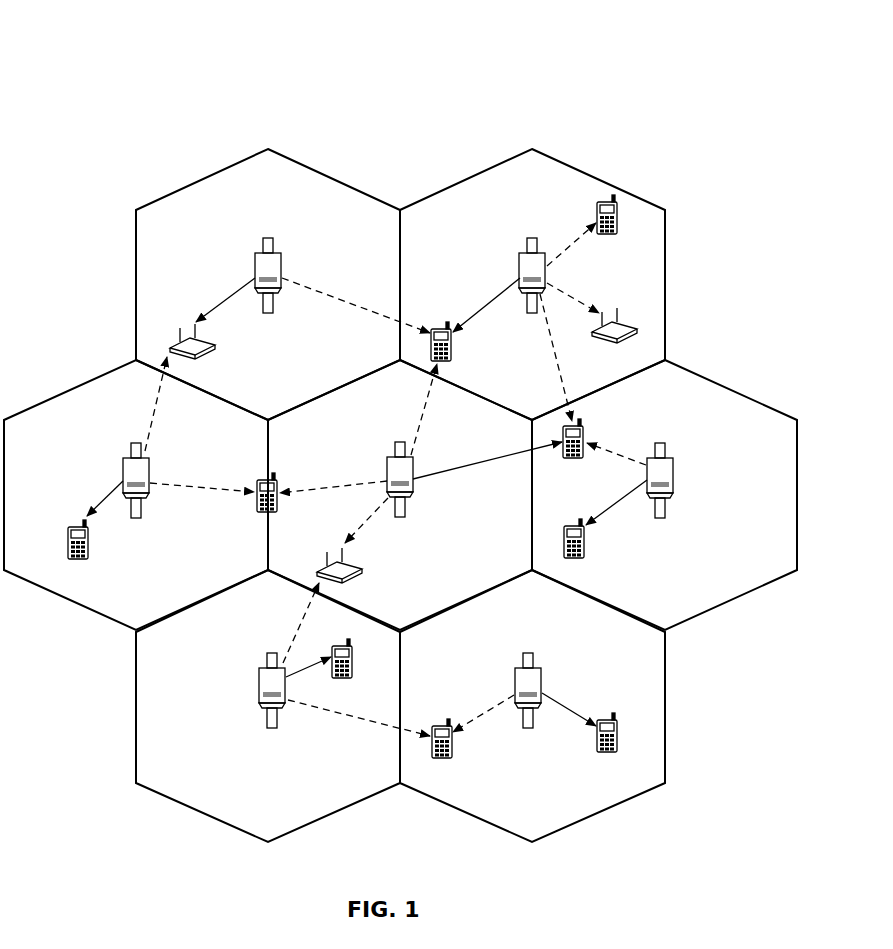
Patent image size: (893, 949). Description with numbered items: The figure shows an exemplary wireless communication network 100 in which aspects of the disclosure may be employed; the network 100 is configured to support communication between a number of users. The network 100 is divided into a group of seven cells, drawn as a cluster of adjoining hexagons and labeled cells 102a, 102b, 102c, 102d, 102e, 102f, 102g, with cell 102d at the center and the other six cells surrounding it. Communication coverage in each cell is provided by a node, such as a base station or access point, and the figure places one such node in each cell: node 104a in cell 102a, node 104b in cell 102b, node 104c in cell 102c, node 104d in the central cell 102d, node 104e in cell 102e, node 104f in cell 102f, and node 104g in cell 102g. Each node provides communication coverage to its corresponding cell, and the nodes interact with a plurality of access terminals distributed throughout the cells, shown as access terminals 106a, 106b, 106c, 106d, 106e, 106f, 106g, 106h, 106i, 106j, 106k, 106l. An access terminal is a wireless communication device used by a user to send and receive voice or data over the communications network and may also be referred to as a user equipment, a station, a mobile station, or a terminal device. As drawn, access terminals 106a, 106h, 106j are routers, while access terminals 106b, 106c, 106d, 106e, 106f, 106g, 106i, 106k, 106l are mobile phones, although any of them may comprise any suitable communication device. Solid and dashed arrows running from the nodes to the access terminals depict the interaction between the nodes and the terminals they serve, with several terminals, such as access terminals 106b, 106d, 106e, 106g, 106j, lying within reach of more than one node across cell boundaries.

The wireless communication network 100 is at (124, 38).
The cell 102a is at (203, 178).
The cell 102b is at (598, 177).
The cell 102c is at (70, 388).
The cell 102d is at (408, 416).
The cell 102e is at (732, 388).
The cell 102f is at (136, 706).
The cell 102g is at (665, 706).
The node 104a is at (254, 275).
The node 104b is at (518, 271).
The node 104c is at (122, 472).
The node 104d is at (386, 469).
The node 104e is at (674, 474).
The node 104f is at (258, 685).
The node 104g is at (513, 685).
The access terminal 106a is at (197, 355).
The access terminal 106b is at (452, 347).
The access terminal 106c is at (88, 545).
The access terminal 106d is at (255, 505).
The access terminal 106e is at (575, 458).
The access terminal 106f is at (353, 662).
The access terminal 106g is at (451, 742).
The access terminal 106h is at (625, 343).
The access terminal 106i is at (617, 216).
The access terminal 106j is at (343, 583).
The access terminal 106k is at (585, 541).
The access terminal 106l is at (613, 717).